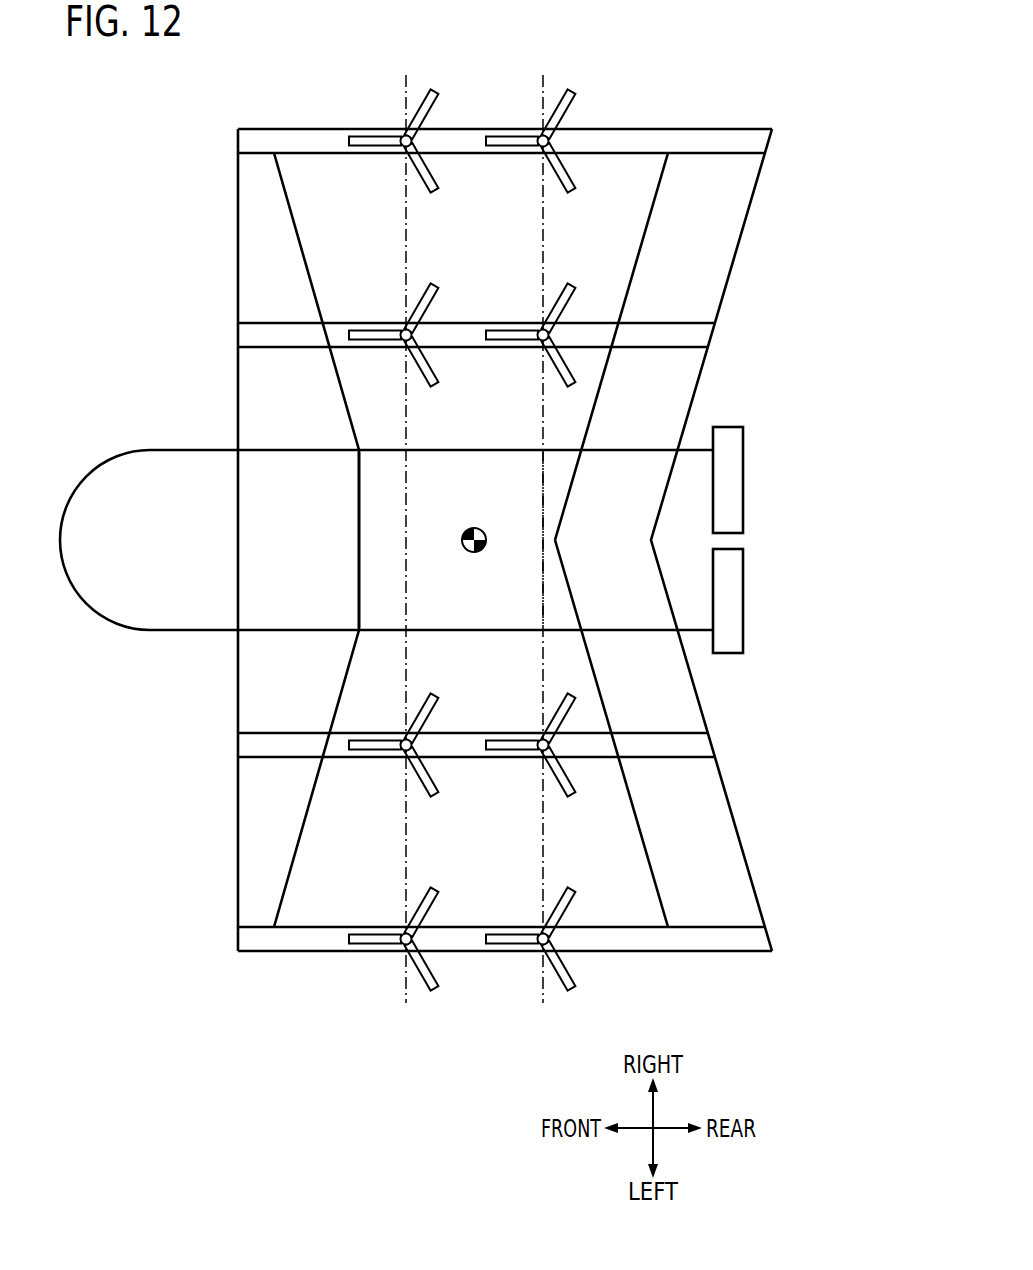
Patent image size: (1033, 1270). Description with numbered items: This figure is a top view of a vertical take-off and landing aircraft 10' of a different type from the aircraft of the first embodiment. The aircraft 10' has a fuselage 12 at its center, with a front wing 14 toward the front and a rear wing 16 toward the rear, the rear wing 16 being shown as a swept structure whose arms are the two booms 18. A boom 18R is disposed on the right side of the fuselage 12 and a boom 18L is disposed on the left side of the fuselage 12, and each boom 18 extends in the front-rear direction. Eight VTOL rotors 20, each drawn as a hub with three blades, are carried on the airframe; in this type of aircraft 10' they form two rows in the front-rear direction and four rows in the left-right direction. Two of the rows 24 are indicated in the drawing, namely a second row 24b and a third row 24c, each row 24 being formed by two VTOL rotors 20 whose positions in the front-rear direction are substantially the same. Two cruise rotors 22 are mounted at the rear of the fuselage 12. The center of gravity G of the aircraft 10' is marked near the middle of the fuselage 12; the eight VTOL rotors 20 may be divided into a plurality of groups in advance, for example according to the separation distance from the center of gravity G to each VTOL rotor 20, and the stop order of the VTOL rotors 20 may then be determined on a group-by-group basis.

The vertical take-off and landing aircraft 10' is at (435, 541).
The fuselage 12 is at (90, 607).
The front wing 14 is at (258, 246).
The rear wing 16 is at (731, 223).
The boom 18 is at (626, 540).
The boom 18R is at (652, 320).
The boom 18L is at (651, 759).
The VTOL rotor 20 is at (375, 140).
The cruise rotor 22 is at (743, 489).
The row 24 is at (470, 515).
The second row 24b is at (406, 486).
The third row 24c is at (543, 420).
The center of gravity G is at (466, 551).